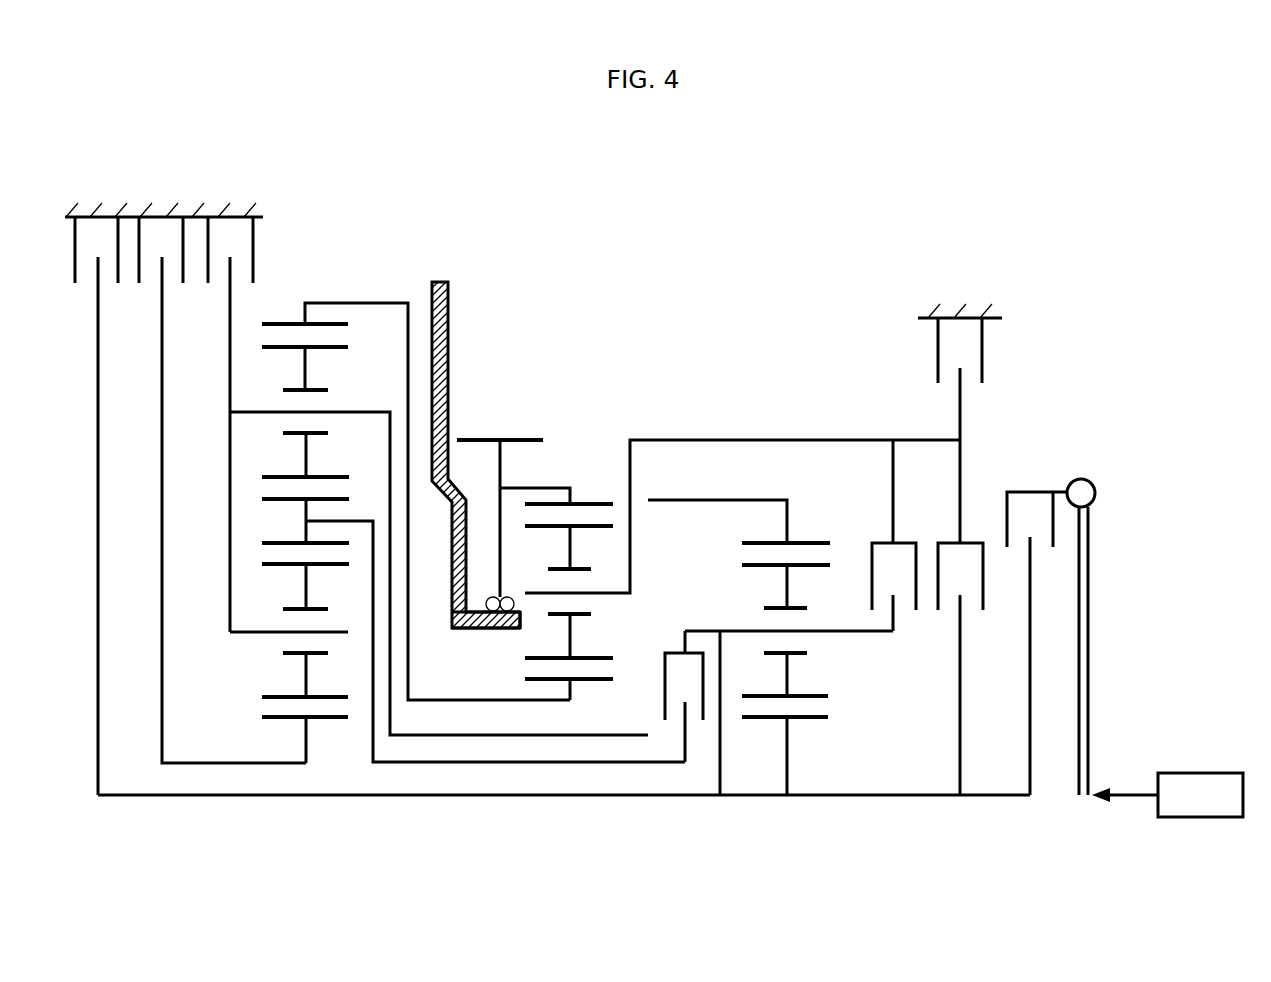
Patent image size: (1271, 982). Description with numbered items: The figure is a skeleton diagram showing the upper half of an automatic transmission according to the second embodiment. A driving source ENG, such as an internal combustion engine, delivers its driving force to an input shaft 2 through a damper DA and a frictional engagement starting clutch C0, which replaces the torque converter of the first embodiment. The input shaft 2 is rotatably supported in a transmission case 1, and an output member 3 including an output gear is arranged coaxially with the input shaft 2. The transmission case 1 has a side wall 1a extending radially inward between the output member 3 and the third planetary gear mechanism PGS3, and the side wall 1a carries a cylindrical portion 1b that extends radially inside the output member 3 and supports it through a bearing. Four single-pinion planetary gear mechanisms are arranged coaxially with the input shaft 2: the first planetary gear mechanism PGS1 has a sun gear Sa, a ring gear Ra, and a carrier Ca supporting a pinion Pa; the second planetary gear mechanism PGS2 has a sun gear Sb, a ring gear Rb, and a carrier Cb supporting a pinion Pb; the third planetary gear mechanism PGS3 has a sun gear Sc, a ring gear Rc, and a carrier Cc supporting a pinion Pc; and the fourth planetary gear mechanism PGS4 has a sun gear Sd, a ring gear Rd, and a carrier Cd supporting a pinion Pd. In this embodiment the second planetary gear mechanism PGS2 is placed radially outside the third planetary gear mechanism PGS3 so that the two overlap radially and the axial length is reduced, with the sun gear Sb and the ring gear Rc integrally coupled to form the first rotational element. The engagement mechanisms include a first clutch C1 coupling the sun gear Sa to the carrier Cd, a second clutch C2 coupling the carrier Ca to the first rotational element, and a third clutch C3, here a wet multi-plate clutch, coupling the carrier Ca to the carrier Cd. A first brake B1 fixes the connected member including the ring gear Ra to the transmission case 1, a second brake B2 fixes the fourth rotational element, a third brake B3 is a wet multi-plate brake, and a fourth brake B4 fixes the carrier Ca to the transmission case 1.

The transmission case 1 is at (165, 210).
The side wall 1a is at (449, 318).
The cylindrical portion 1b is at (478, 630).
The input shaft 2 is at (993, 797).
The output member 3 is at (524, 440).
The first brake B1 is at (230, 424).
The second brake B2 is at (222, 490).
The third brake B3 is at (960, 430).
The fourth brake B4 is at (96, 506).
The starting clutch C0 is at (1037, 643).
The first clutch C1 is at (960, 669).
The second clutch C2 is at (684, 707).
The third clutch C3 is at (894, 535).
The first planetary gear mechanism PGS1 is at (776, 669).
The second planetary gear mechanism PGS2 is at (457, 463).
The third planetary gear mechanism PGS3 is at (293, 693).
The fourth planetary gear mechanism PGS4 is at (728, 647).
The ring gear Ra is at (809, 542).
The ring gear Rb is at (283, 322).
The ring gear Rc is at (280, 543).
The ring gear Rd is at (591, 503).
The sun gear Sa is at (767, 700).
The sun gear Sb is at (333, 498).
The sun gear Sc is at (287, 698).
The sun gear Sd is at (545, 660).
The pinion Pa is at (760, 700).
The pinion Pb is at (323, 345).
The pinion Pc is at (278, 718).
The pinion Pd is at (538, 660).
The carrier Ca is at (855, 633).
The carrier Cb is at (363, 410).
The carrier Cc is at (243, 633).
The carrier Cd is at (618, 596).
The damper DA is at (1106, 475).
The driving source ENG is at (1167, 795).